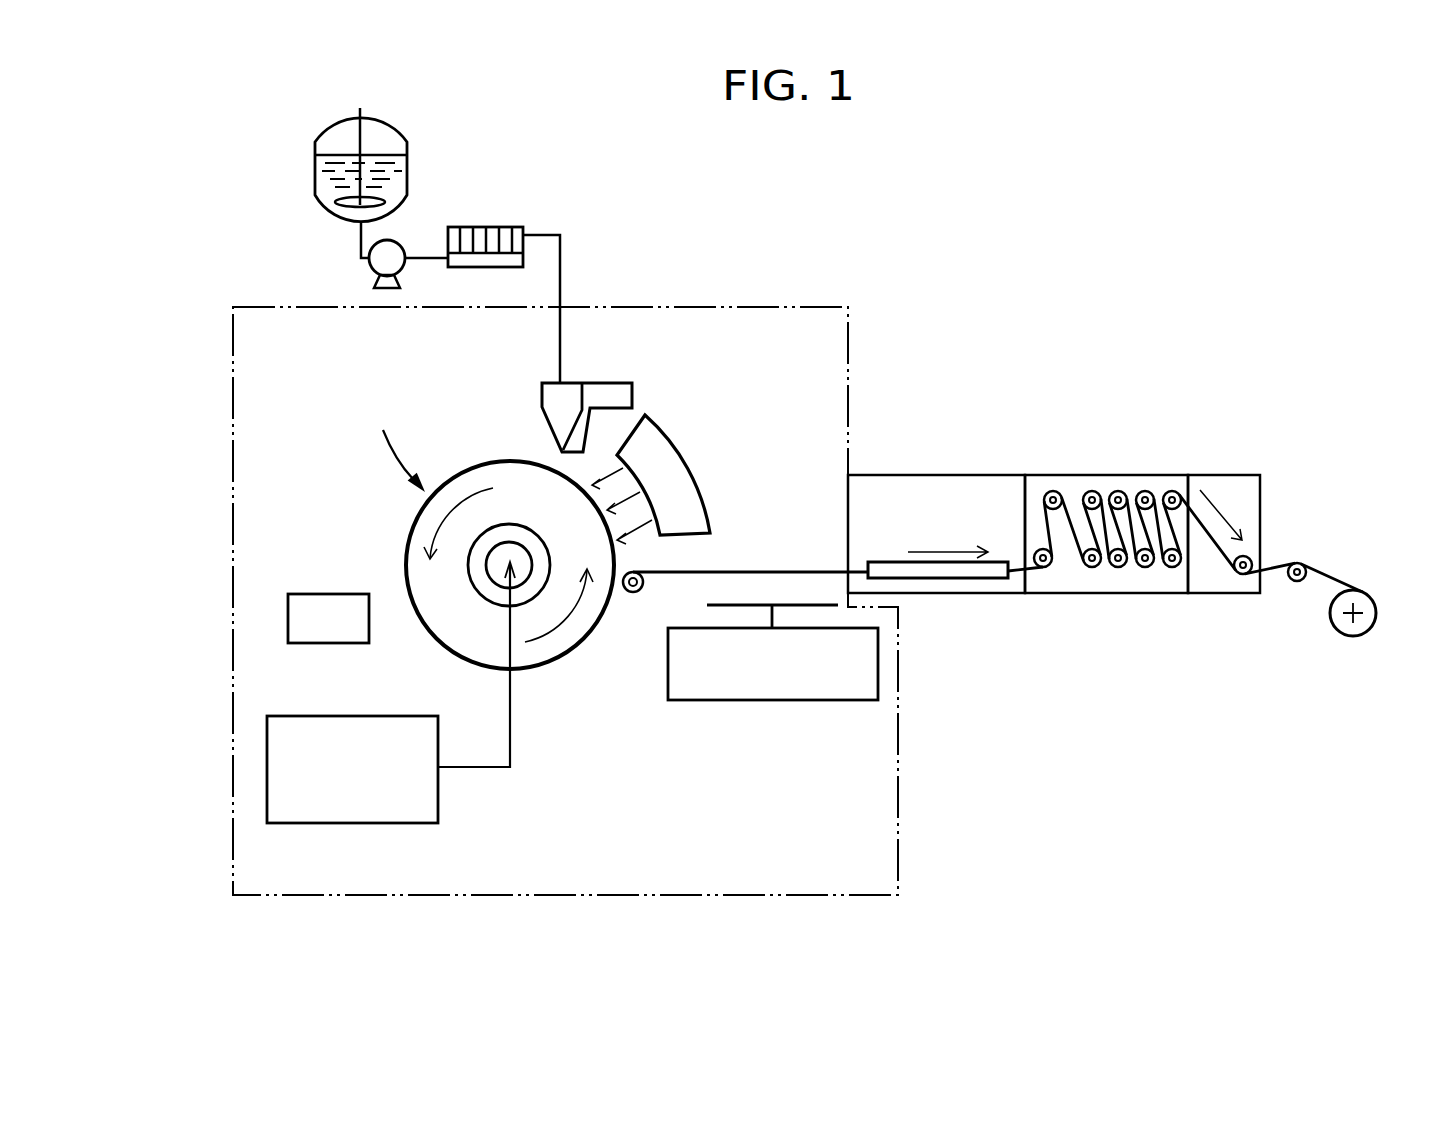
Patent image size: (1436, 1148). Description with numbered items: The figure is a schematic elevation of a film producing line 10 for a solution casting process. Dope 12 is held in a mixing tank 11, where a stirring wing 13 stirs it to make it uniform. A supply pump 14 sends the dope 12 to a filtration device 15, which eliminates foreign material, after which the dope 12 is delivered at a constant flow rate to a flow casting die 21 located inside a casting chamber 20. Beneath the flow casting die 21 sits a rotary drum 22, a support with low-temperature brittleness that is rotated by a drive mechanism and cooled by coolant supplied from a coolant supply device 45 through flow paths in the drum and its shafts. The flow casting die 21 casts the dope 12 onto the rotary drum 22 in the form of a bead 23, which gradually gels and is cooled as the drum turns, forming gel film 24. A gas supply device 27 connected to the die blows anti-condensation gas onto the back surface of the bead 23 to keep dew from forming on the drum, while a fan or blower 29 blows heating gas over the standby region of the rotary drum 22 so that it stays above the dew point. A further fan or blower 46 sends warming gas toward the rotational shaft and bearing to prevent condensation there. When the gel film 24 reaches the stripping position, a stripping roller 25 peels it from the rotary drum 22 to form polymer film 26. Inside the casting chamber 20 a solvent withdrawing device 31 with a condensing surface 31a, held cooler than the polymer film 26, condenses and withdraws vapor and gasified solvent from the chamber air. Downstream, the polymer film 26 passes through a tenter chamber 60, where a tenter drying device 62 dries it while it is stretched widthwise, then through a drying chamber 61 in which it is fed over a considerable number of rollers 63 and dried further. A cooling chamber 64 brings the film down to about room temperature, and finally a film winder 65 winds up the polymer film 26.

The film producing line 10 is at (703, 262).
The mixing tank 11 is at (333, 124).
The dope 12 is at (322, 177).
The stirring wing 13 is at (345, 207).
The supply pump 14 is at (398, 243).
The filtration device 15 is at (492, 227).
The casting chamber 20 is at (832, 306).
The flow casting die 21 is at (542, 393).
The rotary drum 22 is at (556, 645).
The bead 23 is at (553, 463).
The gel film 24 is at (395, 444).
The stripping roller 25 is at (650, 575).
The polymer film 26 is at (780, 571).
The gas supply device 27 is at (614, 383).
The fan or blower 29 is at (714, 468).
The solvent withdrawing device 31 is at (780, 702).
The condensing surface 31a is at (730, 604).
The coolant supply device 45 is at (346, 824).
The fan or blower 46 is at (333, 594).
The tenter chamber 60 is at (950, 588).
The drying chamber 61 is at (1113, 585).
The tenter drying device 62 is at (893, 567).
The rollers 63 is at (1120, 492).
The cooling chamber 64 is at (1224, 586).
The film winder 65 is at (1358, 636).